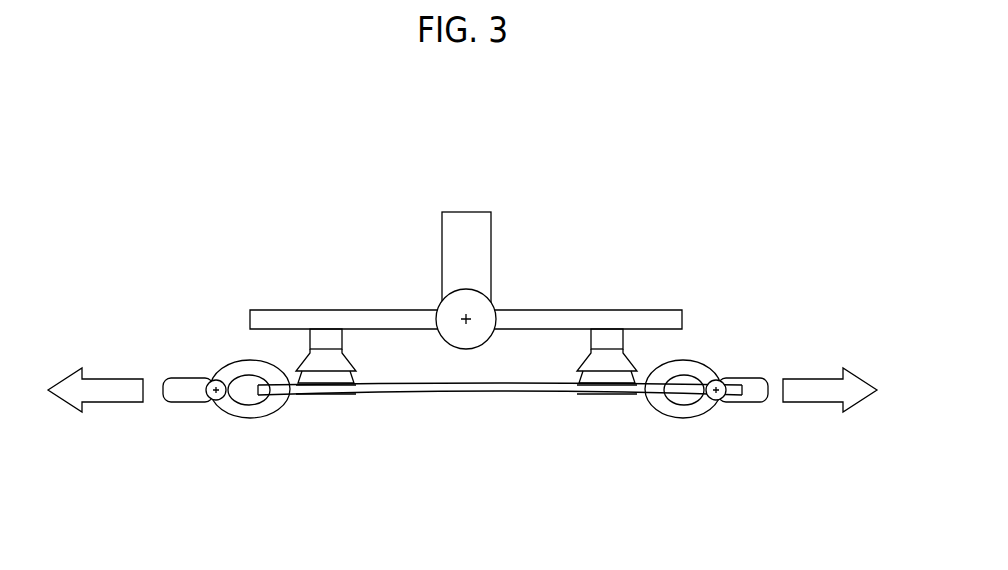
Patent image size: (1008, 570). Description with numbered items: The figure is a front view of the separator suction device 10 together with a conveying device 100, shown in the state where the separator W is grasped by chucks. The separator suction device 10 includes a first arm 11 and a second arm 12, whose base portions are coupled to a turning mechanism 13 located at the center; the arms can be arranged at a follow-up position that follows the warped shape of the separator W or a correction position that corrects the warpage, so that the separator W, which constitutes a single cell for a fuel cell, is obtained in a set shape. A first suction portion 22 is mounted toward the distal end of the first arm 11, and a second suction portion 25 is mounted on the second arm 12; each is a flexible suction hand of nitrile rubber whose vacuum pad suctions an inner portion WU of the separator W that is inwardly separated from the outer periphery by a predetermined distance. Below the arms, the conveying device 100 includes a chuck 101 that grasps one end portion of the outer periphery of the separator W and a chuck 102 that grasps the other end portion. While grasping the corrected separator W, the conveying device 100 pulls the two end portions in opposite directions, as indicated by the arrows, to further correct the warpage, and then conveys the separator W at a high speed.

The separator suction device 10 is at (484, 248).
The first arm 11 is at (265, 310).
The second arm 12 is at (667, 310).
The turning mechanism 13 is at (493, 302).
The first suction portion 22 is at (352, 360).
The second suction portion 25 is at (586, 360).
The conveying device 100 is at (462, 392).
The chuck 101 is at (248, 420).
The chuck 102 is at (681, 420).
The separator W is at (419, 393).
The inner portion WU is at (328, 395).